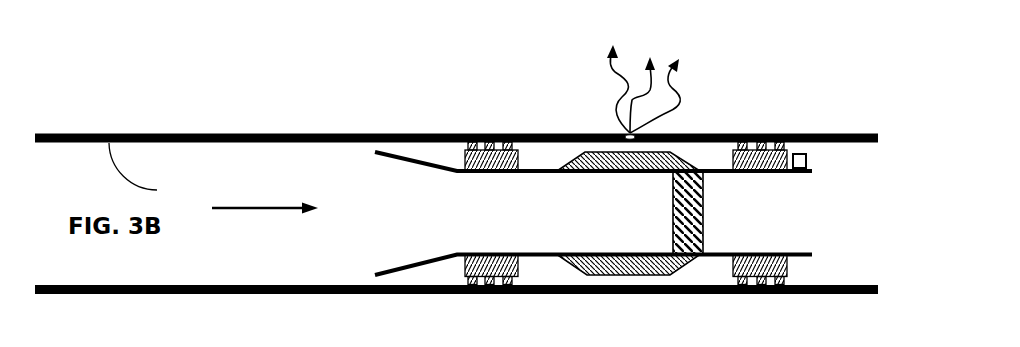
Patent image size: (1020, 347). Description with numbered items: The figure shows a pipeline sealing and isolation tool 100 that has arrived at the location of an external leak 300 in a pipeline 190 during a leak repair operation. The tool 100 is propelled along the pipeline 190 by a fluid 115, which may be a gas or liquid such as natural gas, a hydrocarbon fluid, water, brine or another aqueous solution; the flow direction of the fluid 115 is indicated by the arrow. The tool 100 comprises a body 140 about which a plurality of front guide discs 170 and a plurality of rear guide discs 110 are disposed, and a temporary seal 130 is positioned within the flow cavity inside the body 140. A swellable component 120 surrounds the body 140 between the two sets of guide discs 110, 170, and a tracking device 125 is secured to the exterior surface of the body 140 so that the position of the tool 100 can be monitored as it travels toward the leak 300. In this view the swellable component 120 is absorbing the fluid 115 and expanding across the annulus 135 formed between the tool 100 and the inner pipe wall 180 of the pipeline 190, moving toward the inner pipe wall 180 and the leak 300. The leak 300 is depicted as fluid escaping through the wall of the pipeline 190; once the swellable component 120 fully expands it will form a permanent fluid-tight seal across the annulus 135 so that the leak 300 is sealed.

The pipeline sealing and isolation tool 100 is at (396, 108).
The rear guide discs 110 is at (463, 133).
The fluid 115 is at (262, 204).
The swellable component 120 is at (593, 152).
The tracking device 125 is at (799, 154).
The temporary seal 130 is at (695, 260).
The annulus 135 is at (562, 152).
The body 140 is at (528, 258).
The front guide discs 170 is at (762, 133).
The inner pipe wall 180 is at (158, 172).
The pipeline 190 is at (193, 133).
The external leak 300 is at (633, 134).